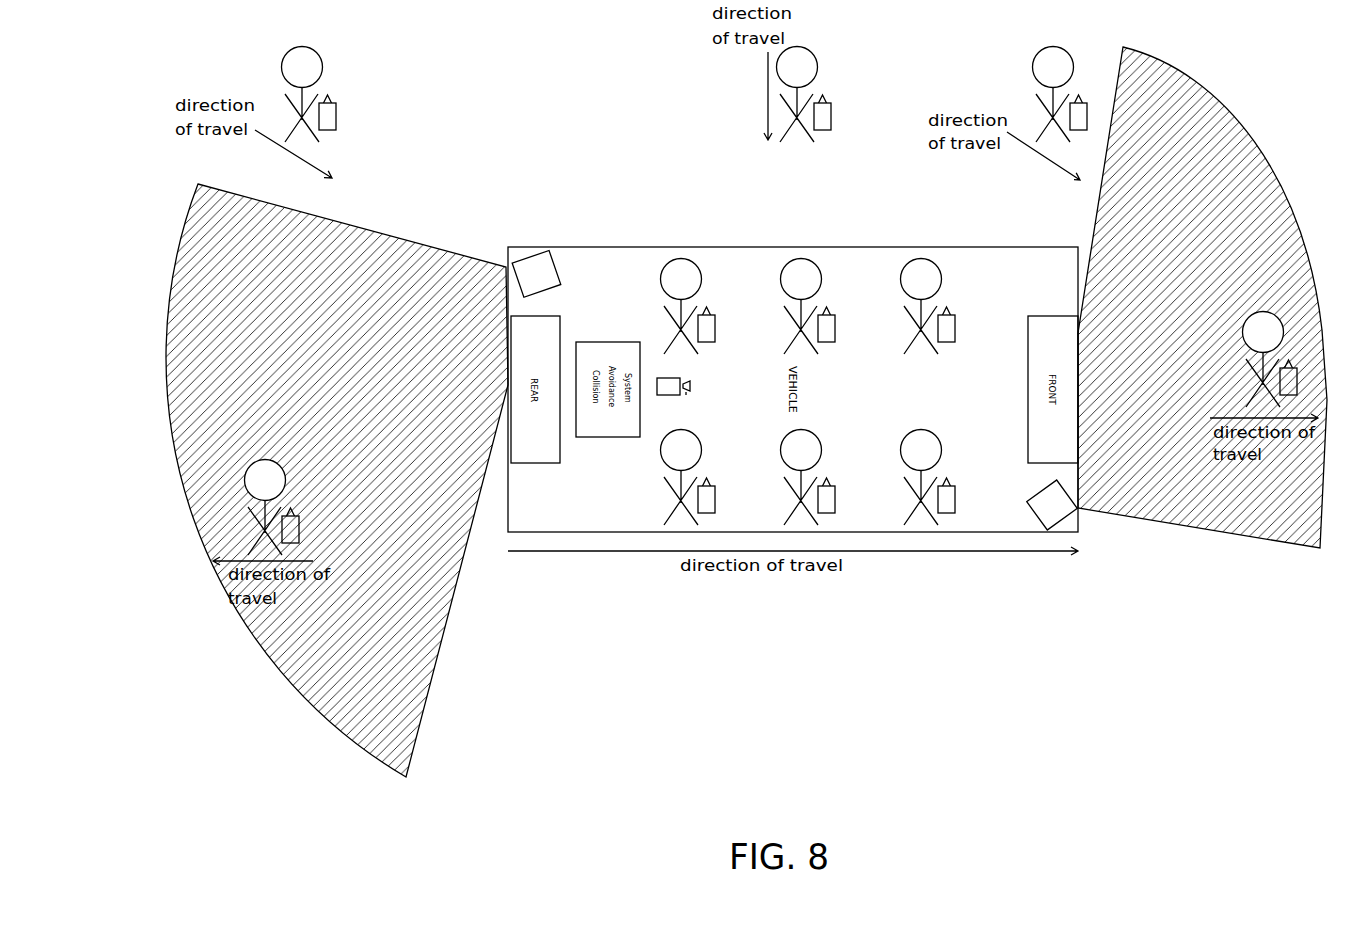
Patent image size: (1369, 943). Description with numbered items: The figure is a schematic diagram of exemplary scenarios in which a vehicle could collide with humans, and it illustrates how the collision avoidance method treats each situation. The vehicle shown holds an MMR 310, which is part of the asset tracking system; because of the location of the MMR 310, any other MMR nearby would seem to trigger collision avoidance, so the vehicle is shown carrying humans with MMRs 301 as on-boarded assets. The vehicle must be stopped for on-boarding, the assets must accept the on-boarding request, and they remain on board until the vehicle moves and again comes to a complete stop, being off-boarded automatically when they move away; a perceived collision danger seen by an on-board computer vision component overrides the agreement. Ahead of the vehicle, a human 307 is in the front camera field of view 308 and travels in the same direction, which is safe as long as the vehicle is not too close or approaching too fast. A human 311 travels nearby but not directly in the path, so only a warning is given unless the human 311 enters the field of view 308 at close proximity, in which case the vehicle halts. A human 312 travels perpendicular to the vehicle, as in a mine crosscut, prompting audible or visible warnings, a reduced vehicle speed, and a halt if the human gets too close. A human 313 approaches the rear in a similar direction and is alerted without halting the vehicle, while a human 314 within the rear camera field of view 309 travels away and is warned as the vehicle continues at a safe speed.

The humans with MMRs 301 is at (672, 259).
The human 307 is at (1257, 397).
The front camera field of view 308 is at (1213, 515).
The rear camera field of view 309 is at (427, 632).
The MMR 310 is at (663, 377).
The human 311 is at (1033, 63).
The human 312 is at (800, 117).
The human 313 is at (323, 65).
The human 314 is at (297, 487).